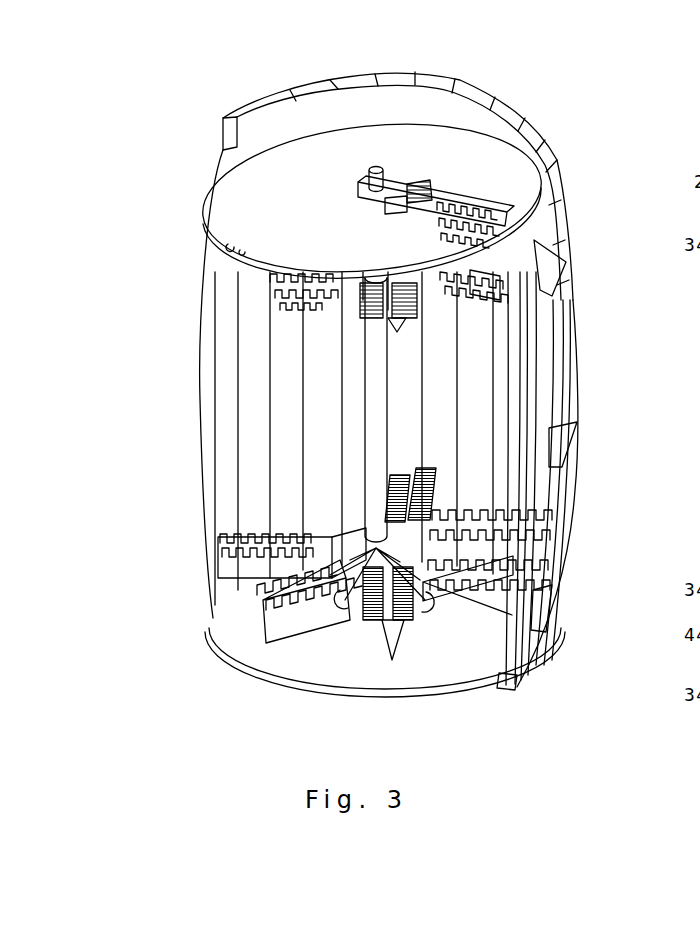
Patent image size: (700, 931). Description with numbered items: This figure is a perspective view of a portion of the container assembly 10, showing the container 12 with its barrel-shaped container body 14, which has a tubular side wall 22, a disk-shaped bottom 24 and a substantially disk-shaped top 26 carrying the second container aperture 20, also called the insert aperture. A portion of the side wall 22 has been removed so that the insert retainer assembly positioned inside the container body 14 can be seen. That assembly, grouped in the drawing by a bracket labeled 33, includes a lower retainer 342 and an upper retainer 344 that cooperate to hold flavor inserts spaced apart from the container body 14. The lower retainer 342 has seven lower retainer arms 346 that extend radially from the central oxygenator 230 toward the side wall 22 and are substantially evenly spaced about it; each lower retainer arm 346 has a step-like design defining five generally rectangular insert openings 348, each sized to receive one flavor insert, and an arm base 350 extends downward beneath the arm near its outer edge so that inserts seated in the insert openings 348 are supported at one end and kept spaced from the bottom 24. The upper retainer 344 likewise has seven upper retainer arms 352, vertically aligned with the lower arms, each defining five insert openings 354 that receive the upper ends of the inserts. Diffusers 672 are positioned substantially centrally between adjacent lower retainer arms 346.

The container assembly 10 is at (557, 85).
The container 12 is at (202, 309).
The container body 14 is at (250, 394).
The second container aperture 20 is at (455, 194).
The side wall 22 is at (547, 514).
The bottom 24 is at (442, 664).
The top 26 is at (285, 150).
The hanging filter assembly 33 is at (646, 335).
The oxygenator 230 is at (380, 443).
The lower retainer 342 is at (430, 492).
The upper retainer 344 is at (407, 307).
The lower retainer arm 346 is at (293, 610).
The insert opening 348 is at (268, 553).
The arm base 350 is at (303, 617).
The upper retainer arm 352 is at (292, 302).
The insert opening 354 is at (490, 287).
The diffuser 672 is at (433, 612).